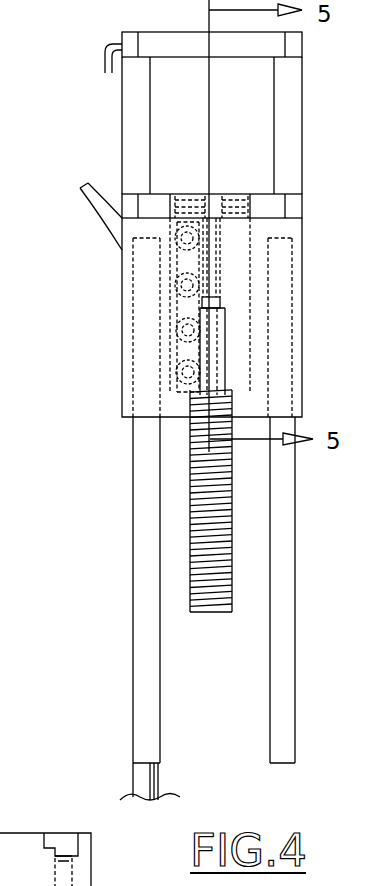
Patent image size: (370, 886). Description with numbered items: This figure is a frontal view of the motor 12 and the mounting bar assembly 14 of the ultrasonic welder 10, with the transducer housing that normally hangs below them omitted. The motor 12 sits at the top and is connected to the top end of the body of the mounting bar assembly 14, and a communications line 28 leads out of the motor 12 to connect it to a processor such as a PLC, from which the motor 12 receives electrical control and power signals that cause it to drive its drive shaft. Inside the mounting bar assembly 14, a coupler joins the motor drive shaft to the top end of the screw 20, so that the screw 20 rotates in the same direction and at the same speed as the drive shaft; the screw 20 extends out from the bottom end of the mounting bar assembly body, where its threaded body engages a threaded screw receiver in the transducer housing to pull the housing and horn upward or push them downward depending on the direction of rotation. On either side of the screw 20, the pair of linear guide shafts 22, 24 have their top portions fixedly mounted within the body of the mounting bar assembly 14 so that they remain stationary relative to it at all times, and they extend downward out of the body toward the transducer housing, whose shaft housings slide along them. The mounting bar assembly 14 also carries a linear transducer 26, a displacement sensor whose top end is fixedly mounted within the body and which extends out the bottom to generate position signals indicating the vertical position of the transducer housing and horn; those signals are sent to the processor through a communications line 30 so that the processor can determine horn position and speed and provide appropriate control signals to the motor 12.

The welder 10 is at (79, 22).
The motor 12 is at (104, 117).
The mounting bar assembly 14 is at (320, 325).
The screw 20 is at (210, 590).
The linear guide shaft 22 is at (143, 610).
The linear guide shaft 24 is at (290, 603).
The linear transducer 26 is at (150, 795).
The communications line 28 is at (105, 59).
The communications line 30 is at (104, 219).